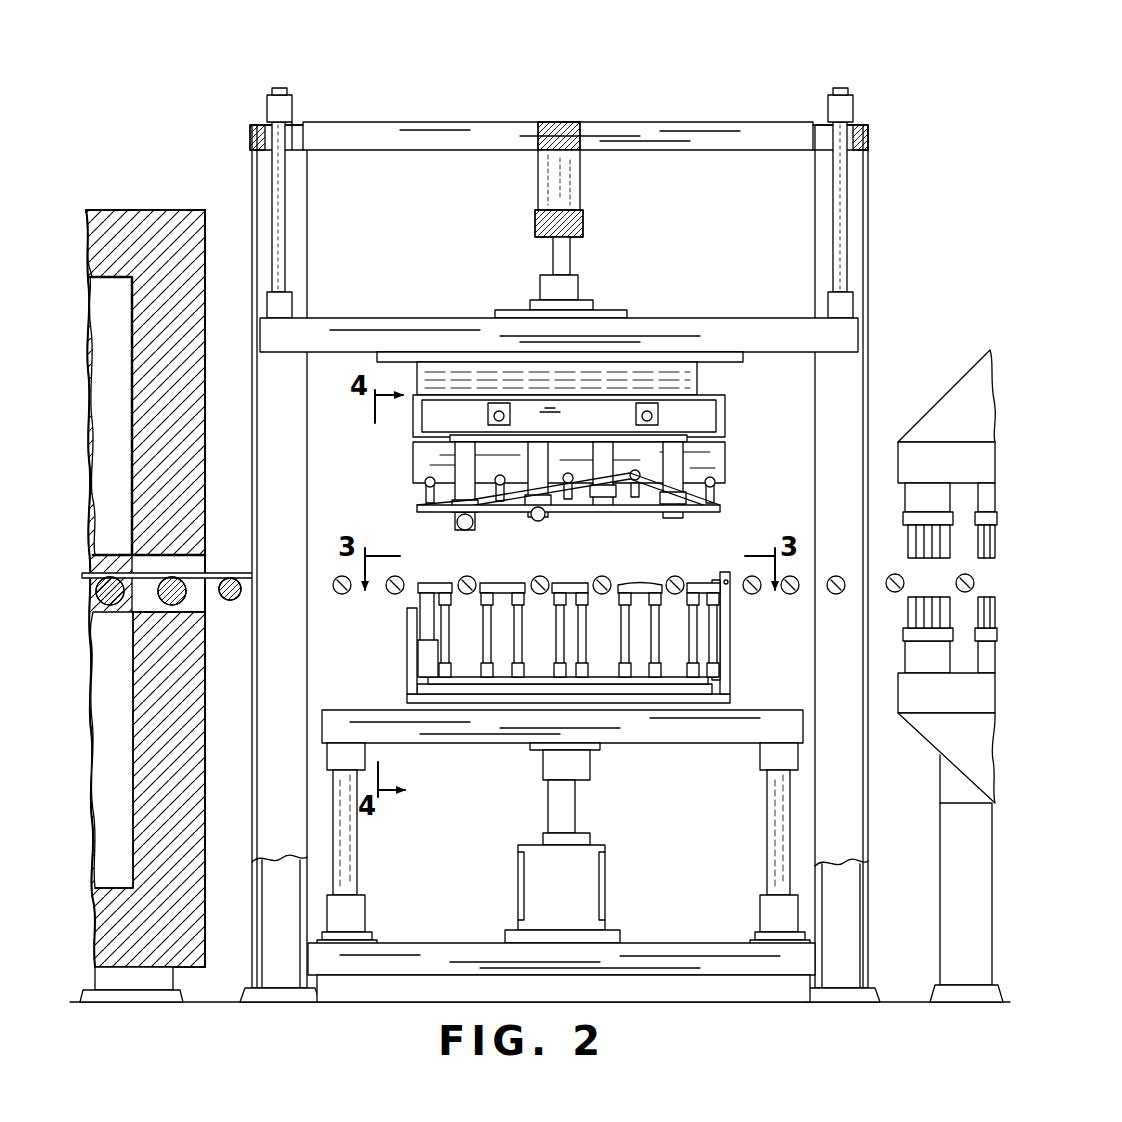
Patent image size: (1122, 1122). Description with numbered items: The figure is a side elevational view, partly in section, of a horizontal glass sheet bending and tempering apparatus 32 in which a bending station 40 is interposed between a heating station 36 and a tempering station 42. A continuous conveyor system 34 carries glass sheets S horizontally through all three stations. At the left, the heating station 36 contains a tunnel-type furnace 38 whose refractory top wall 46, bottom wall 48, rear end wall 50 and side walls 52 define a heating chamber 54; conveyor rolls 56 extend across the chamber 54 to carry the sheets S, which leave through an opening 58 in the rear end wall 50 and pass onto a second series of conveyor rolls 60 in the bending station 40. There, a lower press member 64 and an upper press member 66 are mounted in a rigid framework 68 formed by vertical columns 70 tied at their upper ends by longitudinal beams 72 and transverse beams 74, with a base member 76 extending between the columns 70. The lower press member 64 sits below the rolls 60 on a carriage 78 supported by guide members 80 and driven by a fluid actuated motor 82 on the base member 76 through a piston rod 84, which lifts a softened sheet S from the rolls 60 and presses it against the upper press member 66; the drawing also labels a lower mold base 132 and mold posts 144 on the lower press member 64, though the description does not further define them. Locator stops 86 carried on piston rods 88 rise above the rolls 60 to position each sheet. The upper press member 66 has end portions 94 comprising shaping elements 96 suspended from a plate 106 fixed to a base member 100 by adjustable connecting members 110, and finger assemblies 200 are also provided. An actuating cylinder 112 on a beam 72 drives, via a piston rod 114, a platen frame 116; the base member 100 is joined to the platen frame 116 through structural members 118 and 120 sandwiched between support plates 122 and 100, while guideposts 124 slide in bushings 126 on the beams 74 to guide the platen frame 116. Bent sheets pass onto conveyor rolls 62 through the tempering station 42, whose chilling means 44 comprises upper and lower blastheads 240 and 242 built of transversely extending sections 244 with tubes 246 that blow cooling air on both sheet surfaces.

The horizontal glass sheet bending and tempering apparatus 32 is at (232, 100).
The continuous conveyor system 34 is at (243, 605).
The heating station 36 is at (143, 560).
The furnace 38 is at (158, 212).
The bending station 40 is at (697, 75).
The tempering station 42 is at (941, 615).
The chilling means 44 is at (938, 571).
The top wall 46 is at (90, 260).
The bottom wall 48 is at (97, 945).
The rear end wall 50 is at (203, 322).
The side walls 52 is at (121, 441).
The heating chamber 54 is at (105, 705).
The conveyor rolls 56 is at (158, 598).
The opening 58 is at (218, 573).
The glass sheet S is at (273, 573).
The conveyor rolls 60 is at (390, 593).
The conveyor rolls 62 is at (865, 600).
The lower press member 64 is at (550, 637).
The upper press member 66 is at (558, 436).
The rigid framework 68 is at (590, 100).
The vertical columns 70 is at (300, 868).
The horizontal beams 72 is at (611, 120).
The horizontal beams 74 is at (305, 126).
The base member 76 is at (668, 950).
The carriage 78 is at (685, 740).
The guide members 80 is at (357, 866).
The fluid actuated motor 82 is at (547, 846).
The piston rod 84 is at (575, 805).
The locator stops 86 is at (728, 578).
The piston rod 88 is at (733, 600).
The end portions 94 is at (640, 515).
The shaping elements 96 is at (574, 512).
The base member 100 is at (727, 414).
The plate 106 is at (725, 452).
The connecting members 110 is at (466, 470).
The actuating cylinder 112 is at (548, 182).
The piston rod 114 is at (570, 253).
The platen frame 116 is at (638, 320).
The structural member 118 is at (455, 378).
The structural member 120 is at (712, 368).
The support plate 122 is at (730, 342).
The guideposts 124 is at (285, 218).
The bushings 126 is at (284, 98).
The lower mold base 132 is at (510, 700).
The mold posts 144 is at (489, 600).
The finger assemblies 200 is at (530, 523).
The upper blasthead 240 is at (958, 398).
The lower blasthead 242 is at (935, 732).
The transversely extending sections 244 is at (988, 490).
The tubes 246 is at (915, 562).